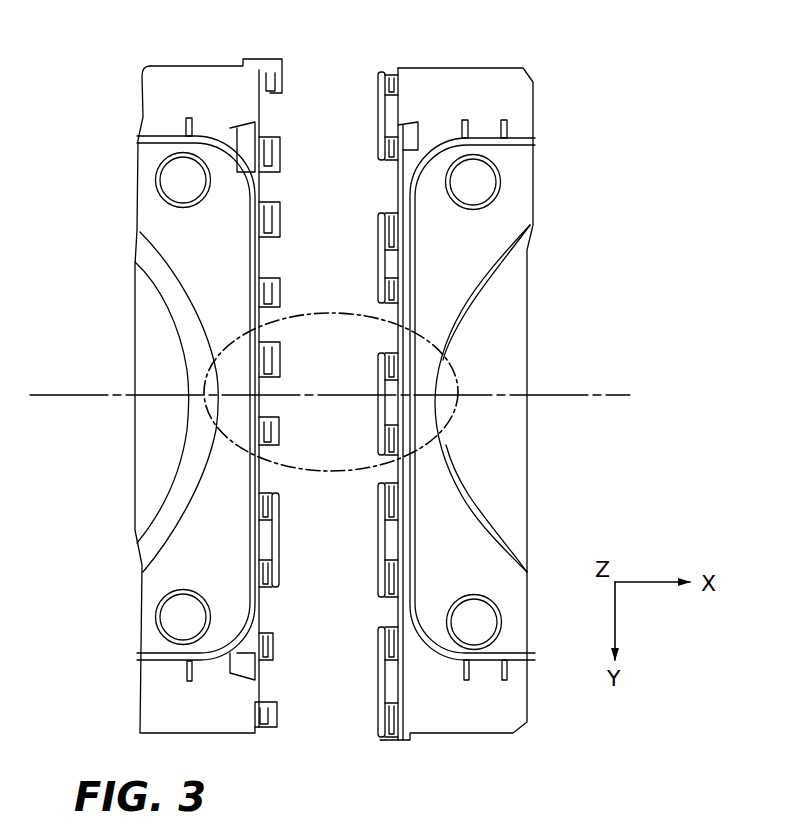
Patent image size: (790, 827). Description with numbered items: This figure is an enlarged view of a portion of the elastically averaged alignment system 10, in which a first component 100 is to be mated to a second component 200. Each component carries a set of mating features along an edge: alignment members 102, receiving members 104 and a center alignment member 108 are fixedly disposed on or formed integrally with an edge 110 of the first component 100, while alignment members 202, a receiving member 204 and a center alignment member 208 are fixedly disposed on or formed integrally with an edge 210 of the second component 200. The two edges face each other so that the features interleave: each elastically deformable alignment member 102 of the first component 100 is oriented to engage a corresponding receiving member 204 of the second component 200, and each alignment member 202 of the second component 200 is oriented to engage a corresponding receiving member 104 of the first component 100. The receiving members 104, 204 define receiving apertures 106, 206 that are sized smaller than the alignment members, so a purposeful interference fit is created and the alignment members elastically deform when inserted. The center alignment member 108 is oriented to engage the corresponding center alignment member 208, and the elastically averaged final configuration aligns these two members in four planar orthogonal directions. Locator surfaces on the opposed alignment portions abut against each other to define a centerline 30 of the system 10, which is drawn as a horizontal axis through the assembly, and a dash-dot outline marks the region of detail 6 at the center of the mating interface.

The elastically averaged alignment system 10 is at (530, 60).
The first component 100 is at (139, 115).
The elastically deformable alignment member 102 is at (282, 706).
The receiving member 104 is at (262, 120).
The receiving aperture 106 is at (263, 257).
The center alignment member 108 is at (290, 361).
The edge 110 is at (273, 648).
The second component 200 is at (540, 117).
The elastically deformable alignment member 202 is at (376, 122).
The receiving member 204 is at (381, 680).
The receiving aperture 206 is at (386, 537).
The center alignment member 208 is at (368, 444).
The edge 210 is at (398, 343).
The centerline 30 is at (598, 395).
The detail region of FIG. 6 is at (458, 411).